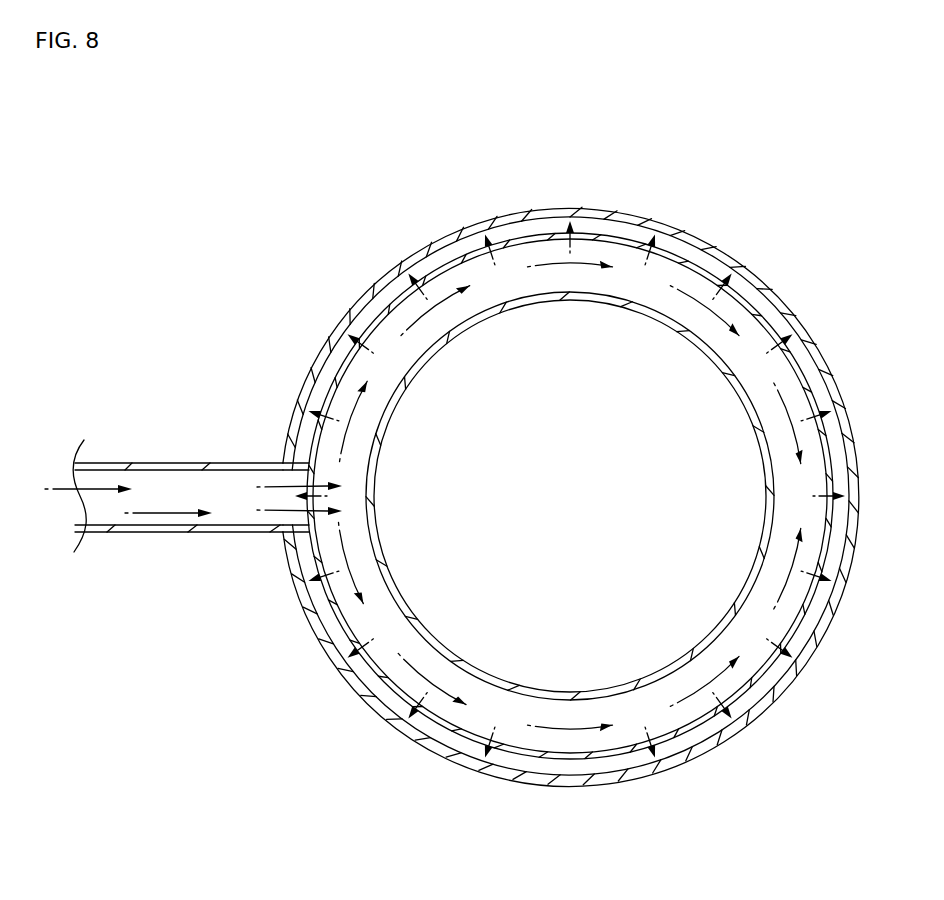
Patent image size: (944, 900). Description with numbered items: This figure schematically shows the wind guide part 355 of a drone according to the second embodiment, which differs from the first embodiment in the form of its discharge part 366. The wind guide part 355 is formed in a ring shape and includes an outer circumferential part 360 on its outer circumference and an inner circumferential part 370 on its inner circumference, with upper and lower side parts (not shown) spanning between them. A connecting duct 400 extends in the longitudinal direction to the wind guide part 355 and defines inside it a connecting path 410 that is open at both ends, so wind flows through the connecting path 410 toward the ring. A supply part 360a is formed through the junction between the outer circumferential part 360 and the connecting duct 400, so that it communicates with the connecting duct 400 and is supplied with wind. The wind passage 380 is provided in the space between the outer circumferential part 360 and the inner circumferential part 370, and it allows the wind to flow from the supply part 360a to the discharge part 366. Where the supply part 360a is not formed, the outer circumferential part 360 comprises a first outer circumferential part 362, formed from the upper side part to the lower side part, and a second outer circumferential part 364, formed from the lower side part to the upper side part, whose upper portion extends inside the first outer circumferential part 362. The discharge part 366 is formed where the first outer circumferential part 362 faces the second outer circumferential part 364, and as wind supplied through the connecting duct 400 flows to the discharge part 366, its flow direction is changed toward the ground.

The wind guide part 355 is at (568, 174).
The outer circumferential part 360 is at (245, 713).
The supply part 360a is at (290, 532).
The first outer circumferential part 362 is at (395, 718).
The second outer circumferential part 364 is at (452, 733).
The discharge part 366 is at (523, 762).
The inner circumferential part 370 is at (767, 497).
The wind passage 380 is at (752, 624).
The connecting duct 400 is at (230, 436).
The connecting path 410 is at (173, 493).